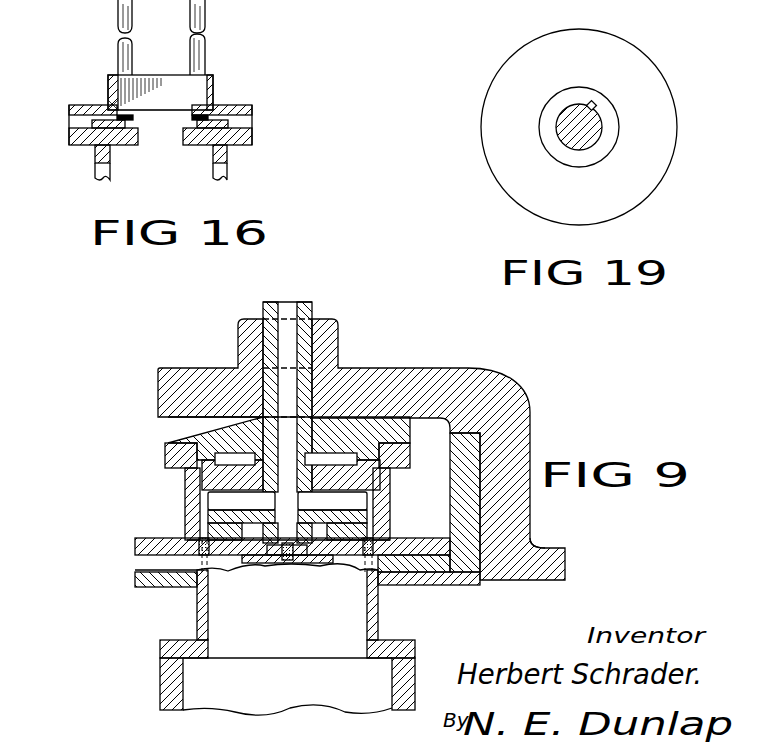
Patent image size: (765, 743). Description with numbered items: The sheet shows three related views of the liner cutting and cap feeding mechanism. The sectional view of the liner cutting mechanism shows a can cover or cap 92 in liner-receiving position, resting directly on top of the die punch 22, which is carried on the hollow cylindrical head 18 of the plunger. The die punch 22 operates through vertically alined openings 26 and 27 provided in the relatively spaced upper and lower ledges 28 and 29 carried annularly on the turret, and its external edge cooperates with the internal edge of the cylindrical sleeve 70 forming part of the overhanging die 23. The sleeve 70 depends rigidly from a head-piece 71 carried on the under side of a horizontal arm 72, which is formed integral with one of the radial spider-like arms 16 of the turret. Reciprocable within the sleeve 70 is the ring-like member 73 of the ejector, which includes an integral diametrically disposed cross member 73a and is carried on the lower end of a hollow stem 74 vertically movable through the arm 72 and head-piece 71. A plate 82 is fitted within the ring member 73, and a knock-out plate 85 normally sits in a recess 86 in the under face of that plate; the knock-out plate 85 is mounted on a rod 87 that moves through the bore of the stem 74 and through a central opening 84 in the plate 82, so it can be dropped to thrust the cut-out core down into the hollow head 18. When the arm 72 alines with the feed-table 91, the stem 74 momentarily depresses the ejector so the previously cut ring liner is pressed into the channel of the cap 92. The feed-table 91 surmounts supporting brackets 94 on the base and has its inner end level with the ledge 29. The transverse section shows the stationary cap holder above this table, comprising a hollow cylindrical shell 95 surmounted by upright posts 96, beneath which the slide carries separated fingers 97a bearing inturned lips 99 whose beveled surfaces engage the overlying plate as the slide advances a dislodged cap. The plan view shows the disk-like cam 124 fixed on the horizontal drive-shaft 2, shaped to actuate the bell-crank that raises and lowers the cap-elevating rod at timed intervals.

In FIG. 16, the upright posts 96 is at (189, 47).
In FIG. 16, the hollow cylindrical shell 95 is at (118, 84).
In FIG. 16, the fingers 97a is at (92, 124).
In FIG. 16, the inturned lips 99 is at (222, 117).
In FIG. 16, the feed-table 91 is at (252, 122).
In FIG. 16, the supporting brackets 94 is at (95, 173).
In FIG. 19, the disk-like cam 124 is at (481, 127).
In FIG. 19, the drive-shaft 2 is at (596, 127).
In FIG. 9, the rod or stem 87 is at (292, 302).
In FIG. 9, the hollow stem 74 is at (312, 308).
In FIG. 9, the horizontal arm 72 is at (192, 370).
In FIG. 9, the cross member 73a is at (325, 470).
In FIG. 9, the head-piece 71 is at (168, 428).
In FIG. 9, the overhanging die 23 is at (276, 471).
In FIG. 9, the ring-like member 73 is at (200, 505).
In FIG. 9, the cylindrical sleeve 70 is at (380, 506).
In FIG. 9, the opening 84 is at (276, 518).
In FIG. 9, the recess 86 is at (326, 528).
In FIG. 9, the plate 82 is at (370, 520).
In FIG. 9, the upper ledge 28 is at (135, 549).
In FIG. 9, the opening 26 is at (390, 546).
In FIG. 9, the opening 27 is at (386, 580).
In FIG. 9, the lower ledge 29 is at (158, 587).
In FIG. 9, the can cover or cap 92 is at (238, 572).
In FIG. 9, the knock-out plate 85 is at (308, 563).
In FIG. 9, the die punch 22 is at (197, 627).
In FIG. 9, the head 18 is at (415, 690).
In FIG. 9, the spider-like arms 16 is at (566, 568).